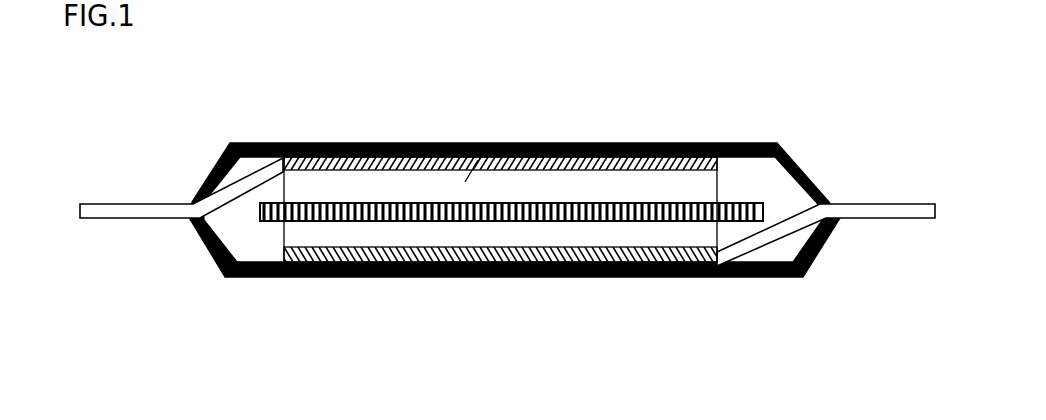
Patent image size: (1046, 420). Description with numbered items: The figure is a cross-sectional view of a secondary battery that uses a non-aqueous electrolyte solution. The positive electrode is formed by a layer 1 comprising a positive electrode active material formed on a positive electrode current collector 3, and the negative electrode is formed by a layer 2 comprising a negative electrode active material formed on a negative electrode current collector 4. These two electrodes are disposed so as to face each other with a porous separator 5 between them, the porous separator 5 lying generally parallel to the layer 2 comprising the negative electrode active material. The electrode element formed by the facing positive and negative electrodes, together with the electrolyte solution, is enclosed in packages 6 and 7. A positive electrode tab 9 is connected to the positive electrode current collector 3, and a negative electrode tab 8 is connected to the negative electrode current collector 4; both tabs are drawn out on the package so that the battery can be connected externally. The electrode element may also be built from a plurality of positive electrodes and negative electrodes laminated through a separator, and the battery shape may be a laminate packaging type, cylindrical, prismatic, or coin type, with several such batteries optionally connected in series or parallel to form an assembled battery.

The layer comprising a positive electrode active material 1 is at (507, 236).
The layer comprising a negative electrode active material 2 is at (515, 190).
The positive electrode current collector 3 is at (495, 307).
The negative electrode current collector 4 is at (494, 132).
The porous separator 5 is at (511, 288).
The package 6 is at (515, 317).
The package 7 is at (492, 175).
The negative electrode tab 8 is at (181, 247).
The positive electrode tab 9 is at (826, 286).